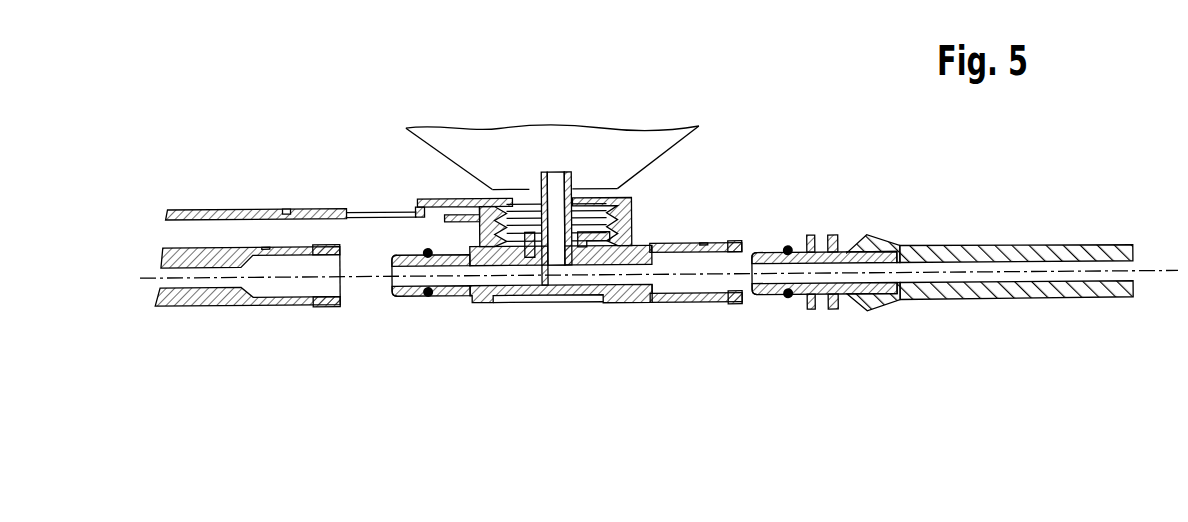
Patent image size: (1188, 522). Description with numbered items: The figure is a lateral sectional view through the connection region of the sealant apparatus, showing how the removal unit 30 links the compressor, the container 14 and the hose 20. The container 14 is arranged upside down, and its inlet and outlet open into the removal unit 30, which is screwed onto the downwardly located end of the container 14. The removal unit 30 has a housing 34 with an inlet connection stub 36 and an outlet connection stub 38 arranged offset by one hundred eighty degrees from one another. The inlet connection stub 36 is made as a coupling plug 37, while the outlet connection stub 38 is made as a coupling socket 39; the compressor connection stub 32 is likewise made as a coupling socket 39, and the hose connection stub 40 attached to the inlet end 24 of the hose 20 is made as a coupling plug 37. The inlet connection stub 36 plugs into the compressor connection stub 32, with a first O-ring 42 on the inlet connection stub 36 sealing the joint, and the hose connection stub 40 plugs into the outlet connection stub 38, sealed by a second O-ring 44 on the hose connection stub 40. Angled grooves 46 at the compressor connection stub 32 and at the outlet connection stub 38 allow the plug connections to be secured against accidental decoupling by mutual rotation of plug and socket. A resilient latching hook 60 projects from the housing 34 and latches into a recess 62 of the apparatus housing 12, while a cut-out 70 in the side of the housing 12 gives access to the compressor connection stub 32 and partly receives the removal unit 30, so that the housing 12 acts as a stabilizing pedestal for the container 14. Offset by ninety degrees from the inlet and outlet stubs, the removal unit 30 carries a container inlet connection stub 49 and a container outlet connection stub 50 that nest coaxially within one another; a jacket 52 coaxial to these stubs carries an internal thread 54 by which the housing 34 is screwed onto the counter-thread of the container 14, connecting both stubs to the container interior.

The housing 12 is at (190, 206).
The container 14 is at (470, 138).
The hose 20 is at (1025, 248).
The inlet end 24 is at (871, 224).
The removal unit 30 is at (556, 307).
The compressor connection stub 32 is at (216, 300).
The housing 34 is at (607, 300).
The inlet connection stub 36 is at (457, 296).
The coupling plug 37 is at (391, 303).
The outlet connection stub 38 is at (690, 302).
The coupling socket 39 is at (266, 238).
The hose connection stub 40 is at (797, 253).
The first O-ring 42 is at (428, 295).
The second O-ring 44 is at (788, 299).
The angled grooves 46 is at (325, 242).
The container inlet connection stub 49 is at (581, 172).
The container outlet connection stub 50 is at (628, 232).
The jacket 52 is at (633, 198).
The internal thread 54 is at (515, 221).
The latching hook 60 is at (432, 197).
The recess 62 is at (287, 206).
The cut-out 70 is at (378, 209).